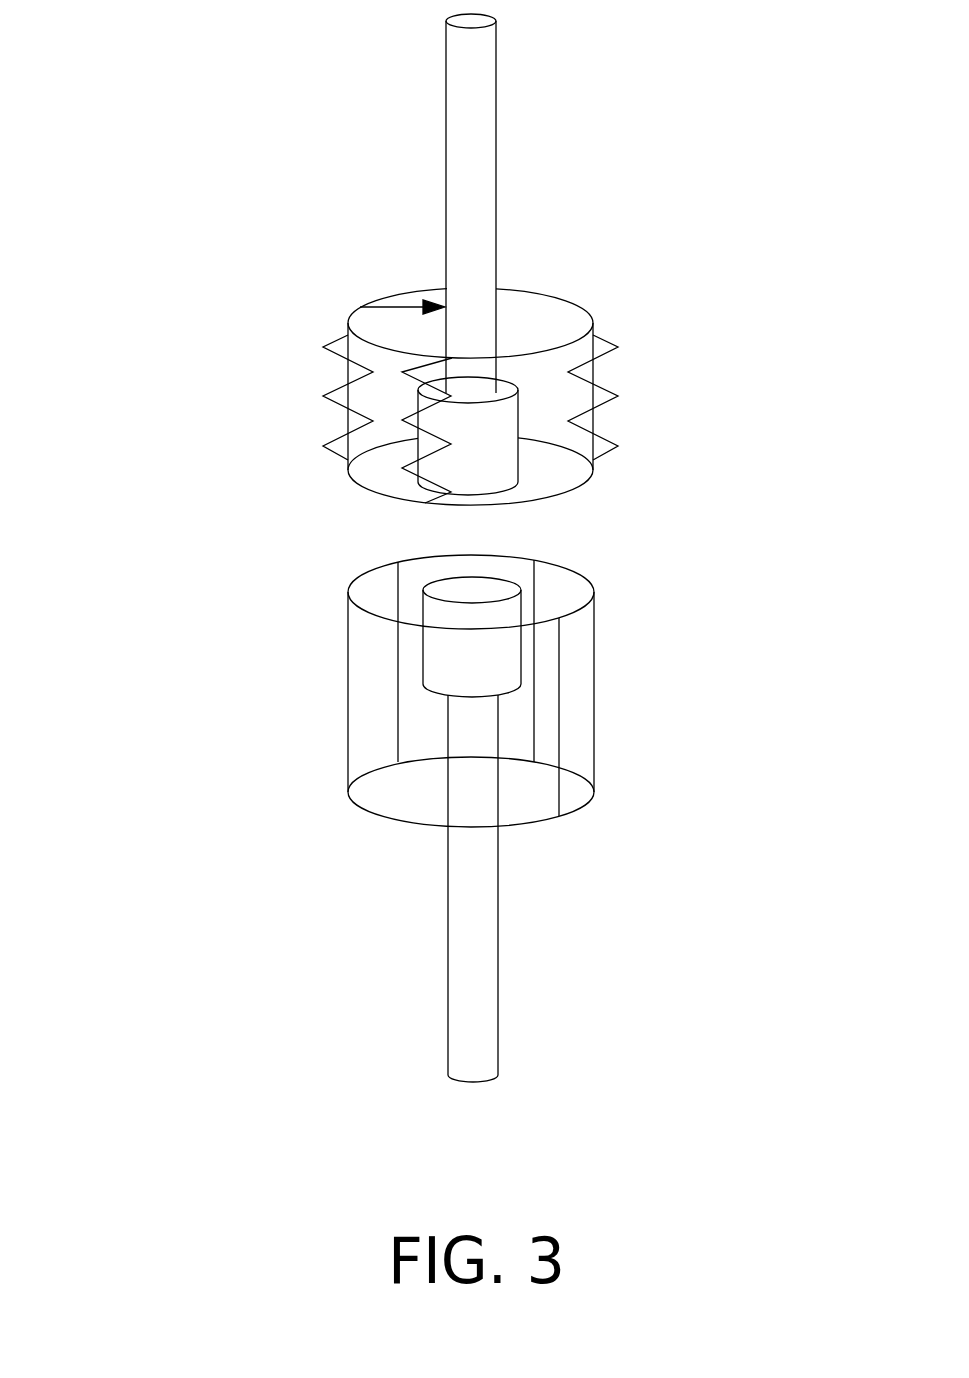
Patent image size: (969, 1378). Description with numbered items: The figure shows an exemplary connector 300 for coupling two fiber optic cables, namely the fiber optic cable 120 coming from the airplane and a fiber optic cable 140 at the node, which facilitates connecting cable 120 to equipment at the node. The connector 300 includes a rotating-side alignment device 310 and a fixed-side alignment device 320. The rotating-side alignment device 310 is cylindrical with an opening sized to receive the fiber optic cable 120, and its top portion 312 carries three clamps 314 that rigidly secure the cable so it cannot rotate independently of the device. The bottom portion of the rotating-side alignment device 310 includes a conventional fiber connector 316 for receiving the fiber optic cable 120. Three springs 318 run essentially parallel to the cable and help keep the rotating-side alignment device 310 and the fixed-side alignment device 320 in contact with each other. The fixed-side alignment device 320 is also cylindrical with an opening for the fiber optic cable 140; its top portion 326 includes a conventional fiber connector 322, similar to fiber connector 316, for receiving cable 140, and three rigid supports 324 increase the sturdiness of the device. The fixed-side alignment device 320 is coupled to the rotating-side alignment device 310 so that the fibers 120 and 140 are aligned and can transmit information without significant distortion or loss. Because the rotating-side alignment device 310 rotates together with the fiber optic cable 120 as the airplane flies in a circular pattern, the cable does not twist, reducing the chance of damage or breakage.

The connector 300 is at (118, 48).
The fiber optic cable 120 is at (497, 60).
The fiber optic cable 140 is at (498, 887).
The rotating-side alignment device 310 is at (682, 324).
The top portion 312 is at (512, 336).
The clamps 314 is at (407, 307).
The fiber connector 316 is at (519, 475).
The spring 318 is at (338, 430).
The fixed-side alignment device 320 is at (670, 669).
The fiber connector 322 is at (423, 640).
The rigid supports 324 is at (398, 700).
The top portion 326 is at (583, 582).